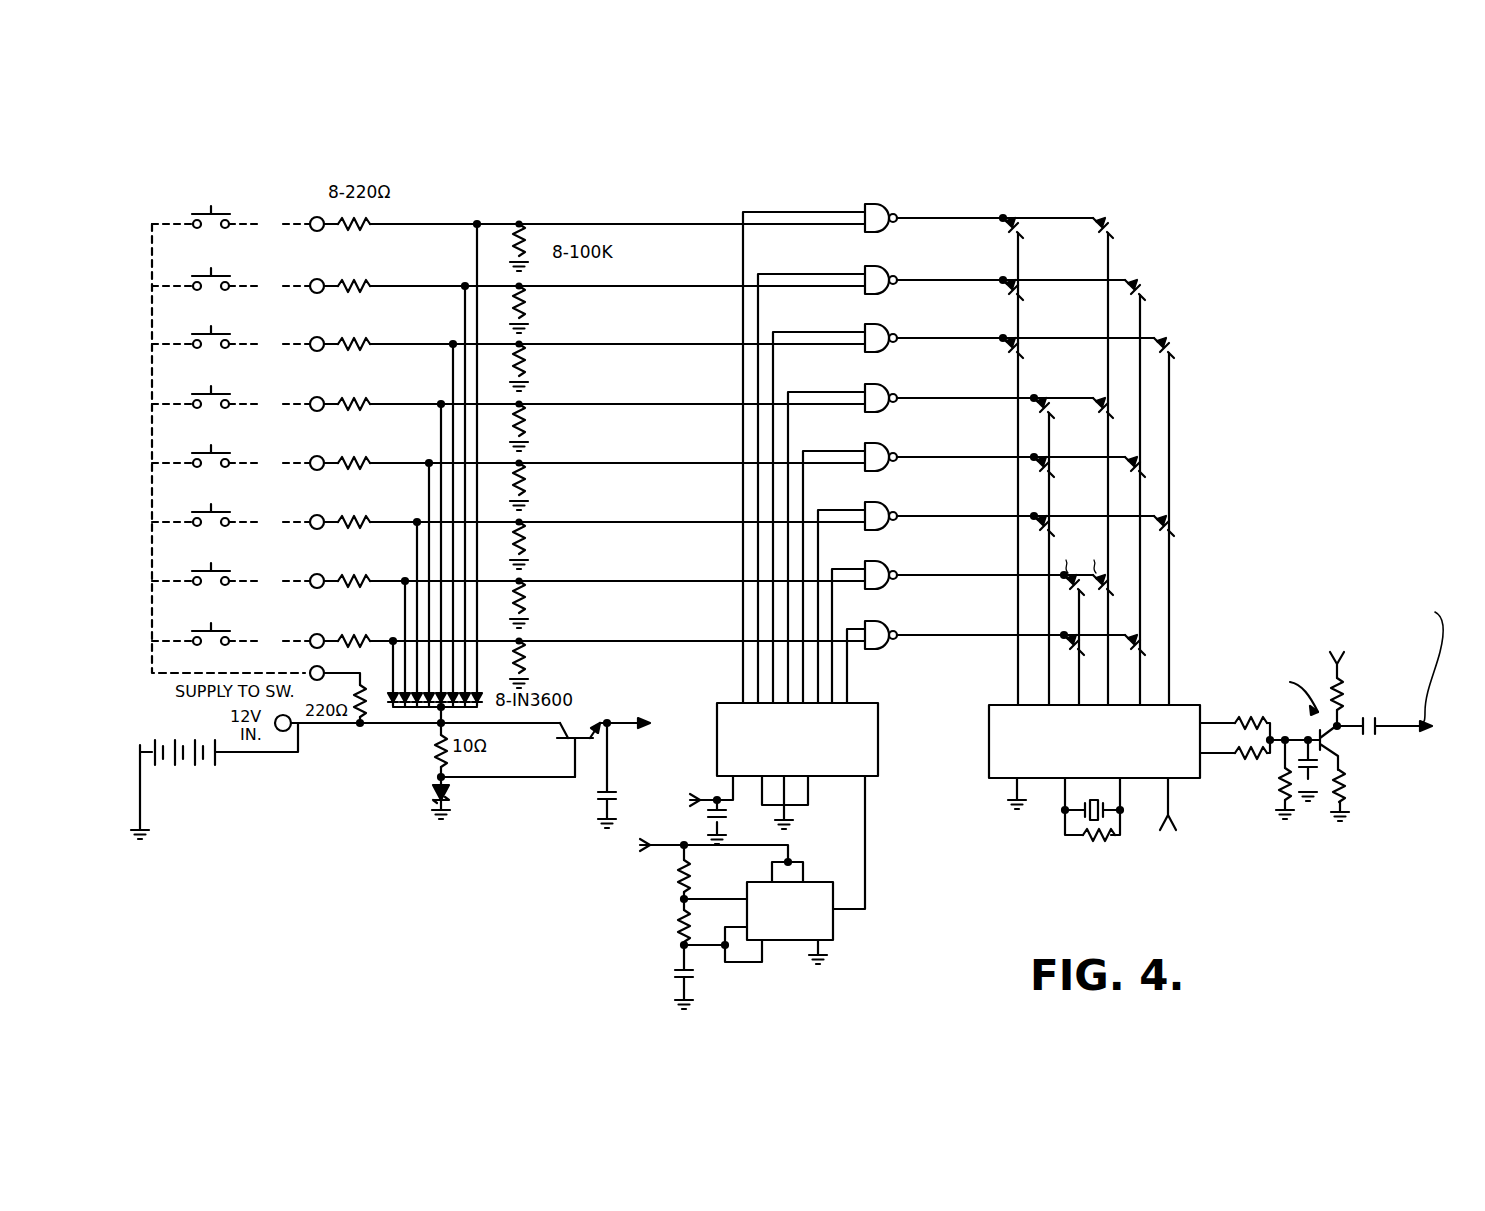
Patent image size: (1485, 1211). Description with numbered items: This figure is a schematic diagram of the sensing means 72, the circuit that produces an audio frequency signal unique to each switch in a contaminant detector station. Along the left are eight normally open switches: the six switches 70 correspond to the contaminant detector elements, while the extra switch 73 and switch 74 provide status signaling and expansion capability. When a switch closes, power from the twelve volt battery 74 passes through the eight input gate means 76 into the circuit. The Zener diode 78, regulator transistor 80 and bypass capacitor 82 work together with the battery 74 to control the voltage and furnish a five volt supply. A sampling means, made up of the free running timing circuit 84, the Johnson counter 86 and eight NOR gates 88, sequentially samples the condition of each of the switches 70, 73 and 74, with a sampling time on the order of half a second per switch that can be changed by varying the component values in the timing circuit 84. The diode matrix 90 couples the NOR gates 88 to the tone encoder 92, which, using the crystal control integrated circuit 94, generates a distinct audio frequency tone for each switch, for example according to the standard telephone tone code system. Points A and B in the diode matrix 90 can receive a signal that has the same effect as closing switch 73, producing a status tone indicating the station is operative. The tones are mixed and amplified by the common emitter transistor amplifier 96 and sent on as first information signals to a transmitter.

The normally open switches 70 is at (193, 298).
The sensing means 72 is at (565, 200).
The switch 73 is at (190, 568).
The switch / 12V battery 74 is at (190, 624).
The eight input gate means 76 is at (525, 672).
The Zener diode 78 is at (405, 803).
The regulator transistor 80 is at (605, 722).
The bypass capacitor 82 is at (614, 800).
The free running timing circuit 84 is at (842, 984).
The Johnson counter 86 is at (878, 760).
The NOR gates 88 is at (895, 208).
The diode matrix 90 is at (1084, 214).
The tone encoder 92 is at (989, 733).
The crystal control integrated circuit 94 is at (1065, 810).
The common emitter transistor amplifier 96 is at (1302, 840).